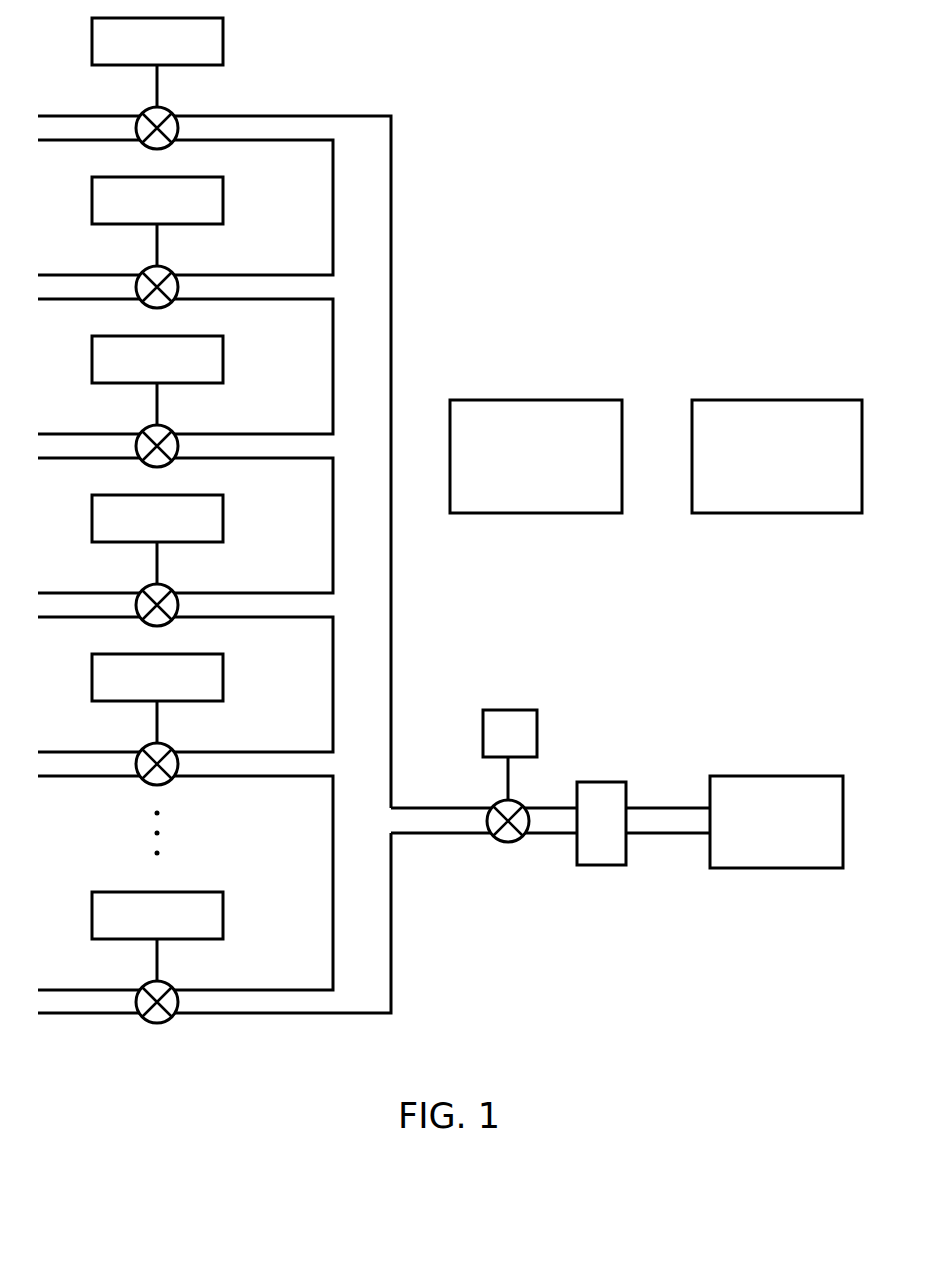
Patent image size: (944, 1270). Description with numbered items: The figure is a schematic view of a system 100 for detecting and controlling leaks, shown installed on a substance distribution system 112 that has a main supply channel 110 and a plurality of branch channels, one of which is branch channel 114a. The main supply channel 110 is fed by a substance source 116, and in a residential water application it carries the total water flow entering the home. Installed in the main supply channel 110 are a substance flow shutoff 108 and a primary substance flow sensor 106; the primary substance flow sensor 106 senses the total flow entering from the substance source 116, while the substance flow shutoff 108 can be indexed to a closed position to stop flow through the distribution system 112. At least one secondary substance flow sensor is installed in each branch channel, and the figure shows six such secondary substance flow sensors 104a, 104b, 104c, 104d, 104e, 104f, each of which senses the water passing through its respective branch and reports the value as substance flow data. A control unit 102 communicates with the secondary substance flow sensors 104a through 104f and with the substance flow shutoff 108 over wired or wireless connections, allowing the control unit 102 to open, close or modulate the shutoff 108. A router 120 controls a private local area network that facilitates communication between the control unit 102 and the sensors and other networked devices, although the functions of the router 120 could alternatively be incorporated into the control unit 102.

The system 100 is at (687, 85).
The control unit 102 is at (532, 400).
The secondary substance flow sensor 104a is at (227, 42).
The secondary substance flow sensor 104b is at (227, 201).
The secondary substance flow sensor 104c is at (227, 360).
The secondary substance flow sensor 104d is at (227, 519).
The secondary substance flow sensor 104e is at (227, 678).
The secondary substance flow sensor 104f is at (227, 916).
The primary substance flow sensor 106 is at (510, 776).
The substance flow shutoff 108 is at (601, 823).
The main supply channel 110 is at (673, 825).
The substance distribution system 112 is at (368, 1054).
The branch channel 114a is at (313, 128).
The substance source 116 is at (803, 776).
The router 120 is at (755, 400).